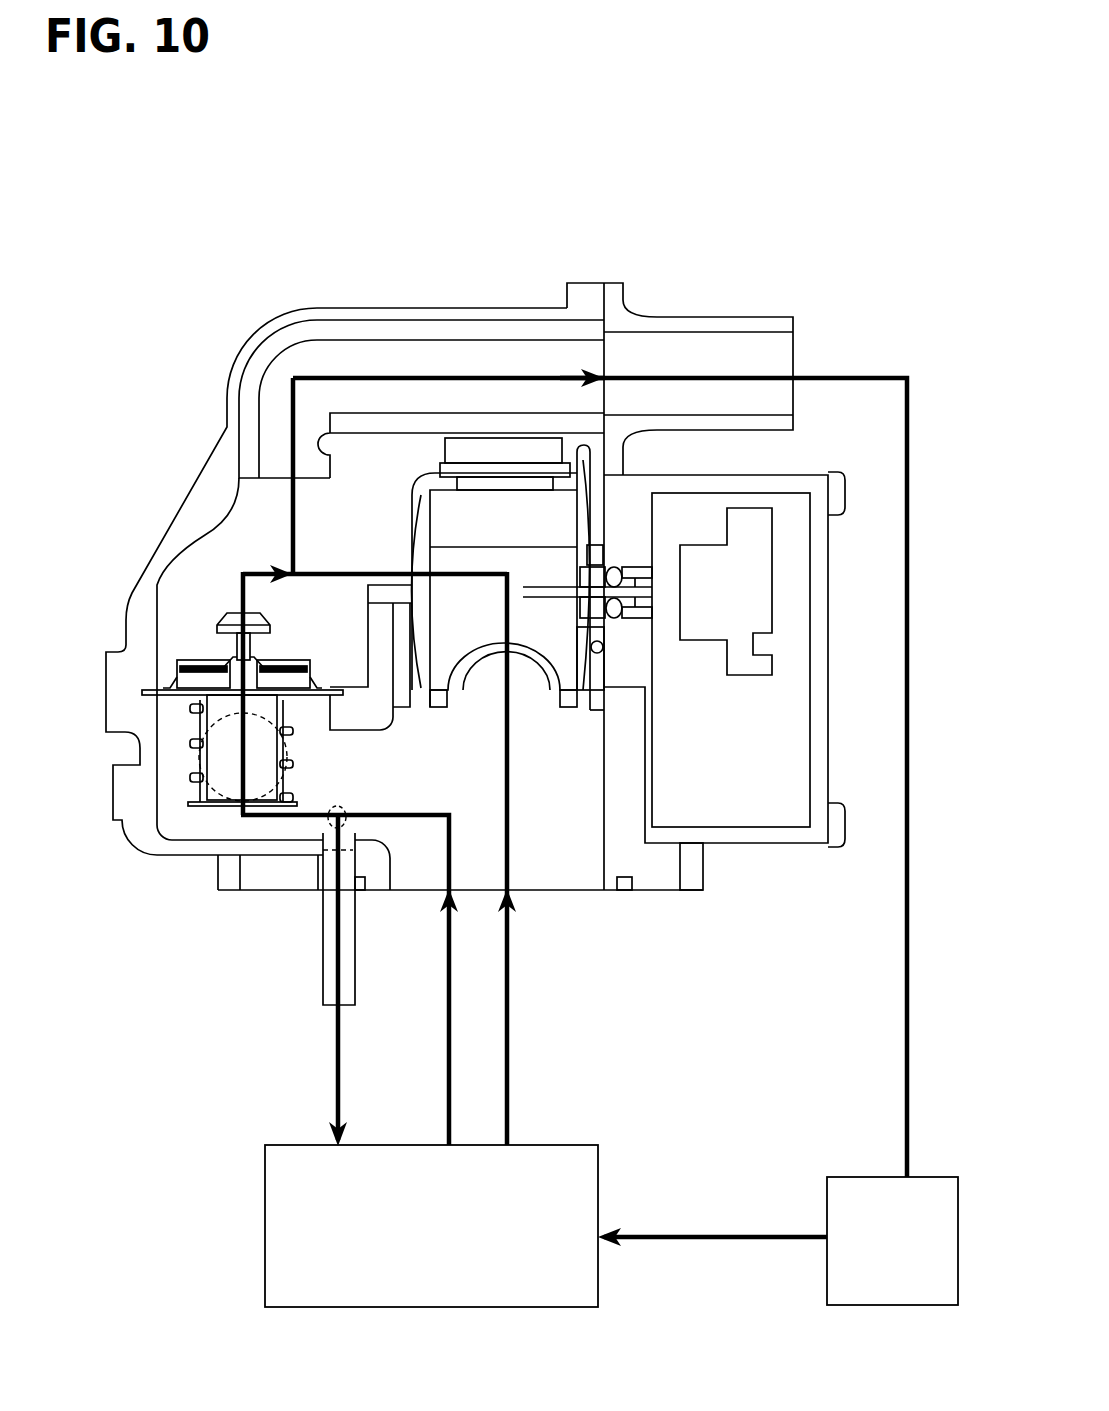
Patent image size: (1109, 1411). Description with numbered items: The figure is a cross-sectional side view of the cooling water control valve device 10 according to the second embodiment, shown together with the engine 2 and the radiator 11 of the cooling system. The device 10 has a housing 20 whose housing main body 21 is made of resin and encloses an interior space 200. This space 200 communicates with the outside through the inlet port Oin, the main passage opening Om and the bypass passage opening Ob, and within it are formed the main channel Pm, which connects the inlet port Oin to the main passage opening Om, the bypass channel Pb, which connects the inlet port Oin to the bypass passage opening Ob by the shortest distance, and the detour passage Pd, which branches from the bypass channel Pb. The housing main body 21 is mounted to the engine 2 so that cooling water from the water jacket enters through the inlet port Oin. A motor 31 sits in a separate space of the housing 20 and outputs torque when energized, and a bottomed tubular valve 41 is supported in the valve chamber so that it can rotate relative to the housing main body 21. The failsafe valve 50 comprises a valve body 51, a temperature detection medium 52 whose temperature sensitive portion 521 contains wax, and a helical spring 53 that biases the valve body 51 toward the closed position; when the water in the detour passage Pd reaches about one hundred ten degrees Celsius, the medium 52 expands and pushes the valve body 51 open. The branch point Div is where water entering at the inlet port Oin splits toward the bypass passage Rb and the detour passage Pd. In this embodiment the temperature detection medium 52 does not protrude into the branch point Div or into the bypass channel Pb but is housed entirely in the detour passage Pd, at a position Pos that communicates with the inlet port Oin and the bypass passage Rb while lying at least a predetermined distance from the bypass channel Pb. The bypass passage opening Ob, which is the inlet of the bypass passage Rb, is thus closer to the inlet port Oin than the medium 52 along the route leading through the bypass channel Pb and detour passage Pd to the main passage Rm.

The cooling water control valve device 10 is at (584, 194).
The housing 20 is at (371, 294).
The housing main body 21 is at (425, 313).
The motor 31 is at (755, 667).
The valve 41 is at (557, 647).
The failsafe valve 50 is at (160, 728).
The valve body 51 is at (177, 672).
The temperature detection medium 52 is at (217, 762).
The spring 53 is at (195, 743).
The temperature sensitive portion 521 is at (193, 777).
The space 200 is at (570, 860).
The engine 2 is at (598, 1168).
The radiator 11 is at (842, 1192).
The main passage opening Om is at (603, 368).
The main passage Rm is at (843, 378).
The main channel Pm is at (293, 530).
The detour passage Pd is at (267, 820).
The bypass channel Pb is at (403, 820).
The branch point Div is at (327, 820).
The bypass passage opening Ob is at (333, 828).
The inlet port Oin is at (535, 893).
The position Pos is at (232, 800).
The bypass passage Rb is at (338, 1040).